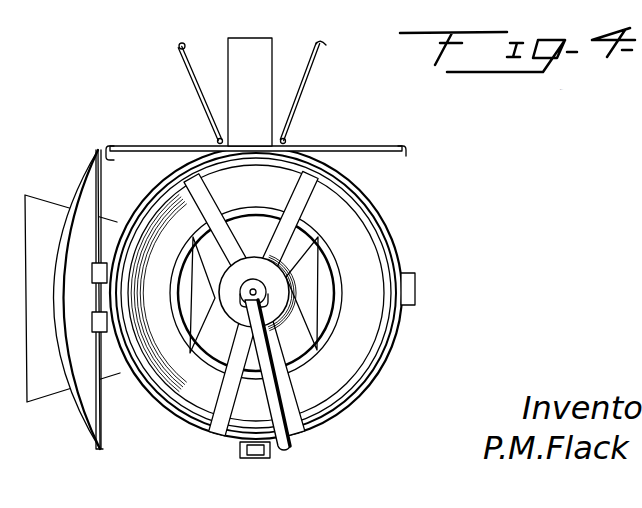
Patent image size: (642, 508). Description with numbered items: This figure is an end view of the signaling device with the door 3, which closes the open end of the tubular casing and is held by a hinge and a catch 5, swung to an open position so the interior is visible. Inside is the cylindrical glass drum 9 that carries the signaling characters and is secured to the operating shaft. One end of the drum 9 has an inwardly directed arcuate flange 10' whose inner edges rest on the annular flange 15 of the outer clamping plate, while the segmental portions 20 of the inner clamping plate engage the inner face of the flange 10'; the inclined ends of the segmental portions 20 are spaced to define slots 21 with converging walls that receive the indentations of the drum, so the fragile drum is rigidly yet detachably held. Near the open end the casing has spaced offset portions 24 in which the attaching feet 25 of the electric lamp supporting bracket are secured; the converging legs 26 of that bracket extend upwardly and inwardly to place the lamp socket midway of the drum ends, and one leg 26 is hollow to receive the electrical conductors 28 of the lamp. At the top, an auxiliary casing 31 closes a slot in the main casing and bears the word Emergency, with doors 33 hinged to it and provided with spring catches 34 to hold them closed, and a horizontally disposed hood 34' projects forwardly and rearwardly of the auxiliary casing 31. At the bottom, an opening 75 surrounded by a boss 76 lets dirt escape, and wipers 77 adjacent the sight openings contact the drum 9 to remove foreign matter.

The door 3 is at (86, 386).
The catch 5 is at (416, 282).
The drum 9 is at (360, 199).
The arcuate shaped flange 10' is at (199, 285).
The annular flange 15 is at (258, 246).
The segmental portions 20 is at (256, 293).
The slots or spaces 21 is at (200, 170).
The offset portions 24 is at (300, 441).
The attaching feet 25 is at (232, 312).
The converging legs 26 is at (289, 282).
The electrical conductors 28 is at (262, 326).
The auxiliary casing 31 is at (253, 37).
The doors 33 is at (186, 81).
The spring catches 34 is at (239, 47).
The hood 34' is at (231, 139).
The opening 75 is at (258, 457).
The boss 76 is at (247, 458).
The rim 77 is at (384, 229).